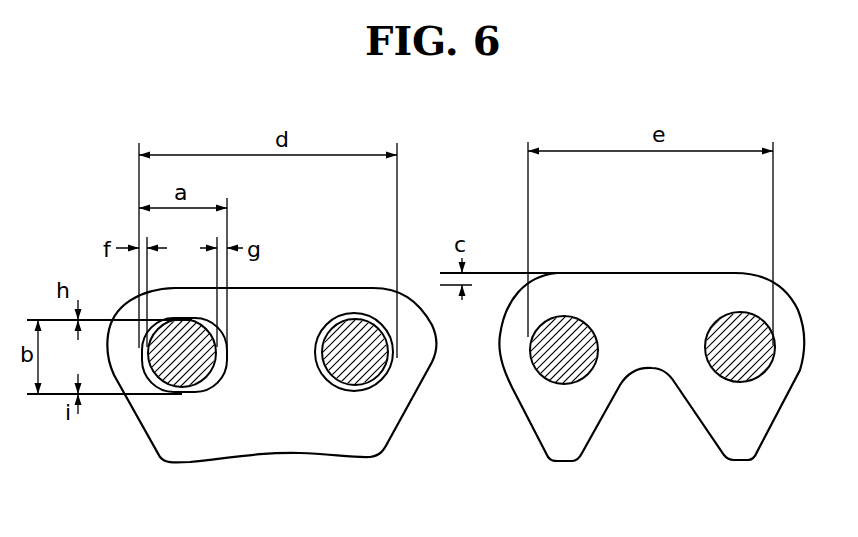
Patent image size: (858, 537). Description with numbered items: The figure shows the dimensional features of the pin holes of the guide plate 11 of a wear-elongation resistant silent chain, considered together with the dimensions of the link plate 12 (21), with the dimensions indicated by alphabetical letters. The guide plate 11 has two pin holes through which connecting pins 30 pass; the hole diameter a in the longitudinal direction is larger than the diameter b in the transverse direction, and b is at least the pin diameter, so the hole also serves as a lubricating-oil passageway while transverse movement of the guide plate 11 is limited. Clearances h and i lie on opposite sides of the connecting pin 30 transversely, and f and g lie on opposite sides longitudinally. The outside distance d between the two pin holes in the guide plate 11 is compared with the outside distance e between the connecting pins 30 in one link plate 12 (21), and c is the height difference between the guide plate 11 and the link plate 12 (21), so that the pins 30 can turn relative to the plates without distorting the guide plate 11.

The guide plate 11 is at (273, 452).
The link plate 12 is at (651, 391).
The link plate 21 is at (700, 417).
The connecting pin 30 is at (182, 373).